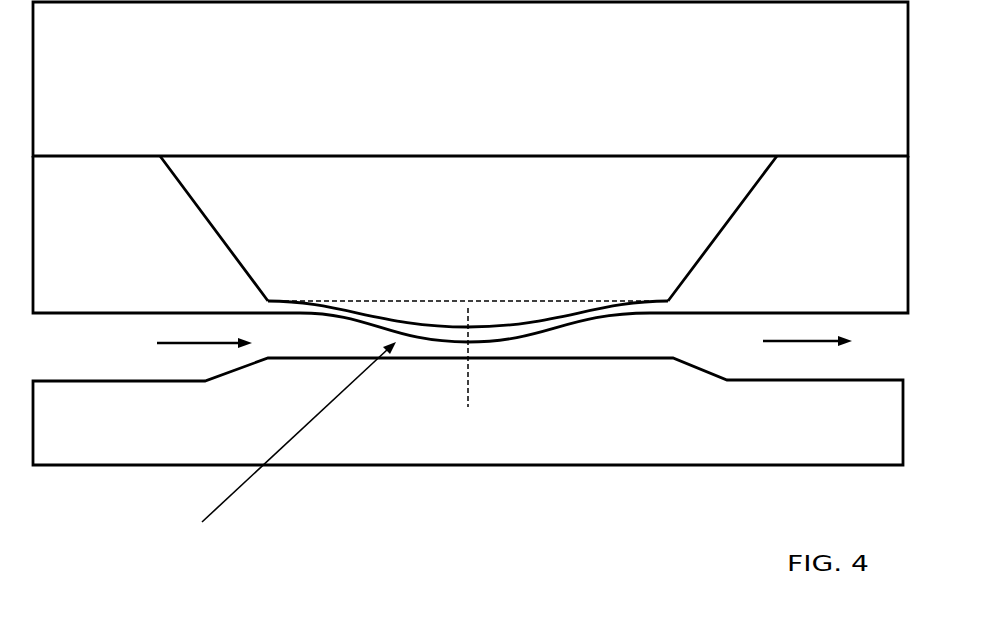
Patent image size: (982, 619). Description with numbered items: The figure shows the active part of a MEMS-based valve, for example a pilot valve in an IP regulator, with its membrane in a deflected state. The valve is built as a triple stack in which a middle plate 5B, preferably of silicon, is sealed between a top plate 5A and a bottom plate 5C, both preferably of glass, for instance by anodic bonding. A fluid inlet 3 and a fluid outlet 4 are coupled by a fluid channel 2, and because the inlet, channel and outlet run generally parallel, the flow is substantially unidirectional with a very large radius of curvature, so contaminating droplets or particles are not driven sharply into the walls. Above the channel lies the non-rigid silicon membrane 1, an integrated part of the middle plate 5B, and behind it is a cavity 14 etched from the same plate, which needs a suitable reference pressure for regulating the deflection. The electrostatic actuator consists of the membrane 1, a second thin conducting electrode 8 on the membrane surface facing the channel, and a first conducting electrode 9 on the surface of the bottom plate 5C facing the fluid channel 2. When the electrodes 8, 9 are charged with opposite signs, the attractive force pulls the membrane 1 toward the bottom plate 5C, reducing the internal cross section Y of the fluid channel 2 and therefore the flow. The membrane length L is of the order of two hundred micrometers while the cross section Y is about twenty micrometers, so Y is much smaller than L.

The membrane 1 is at (394, 325).
The fluid channel 2 is at (287, 442).
The fluid inlet 3 is at (146, 345).
The fluid outlet 4 is at (821, 348).
The top plate 5A is at (470, 79).
The middle plate 5B is at (470, 234).
The bottom plate 5C is at (468, 411).
The second conducting electrode 8 is at (537, 332).
The first conducting electrode 9 is at (568, 359).
The cavity 14 is at (468, 228).
The membrane length L is at (468, 288).
The cross section of the fluid channel Y is at (479, 360).